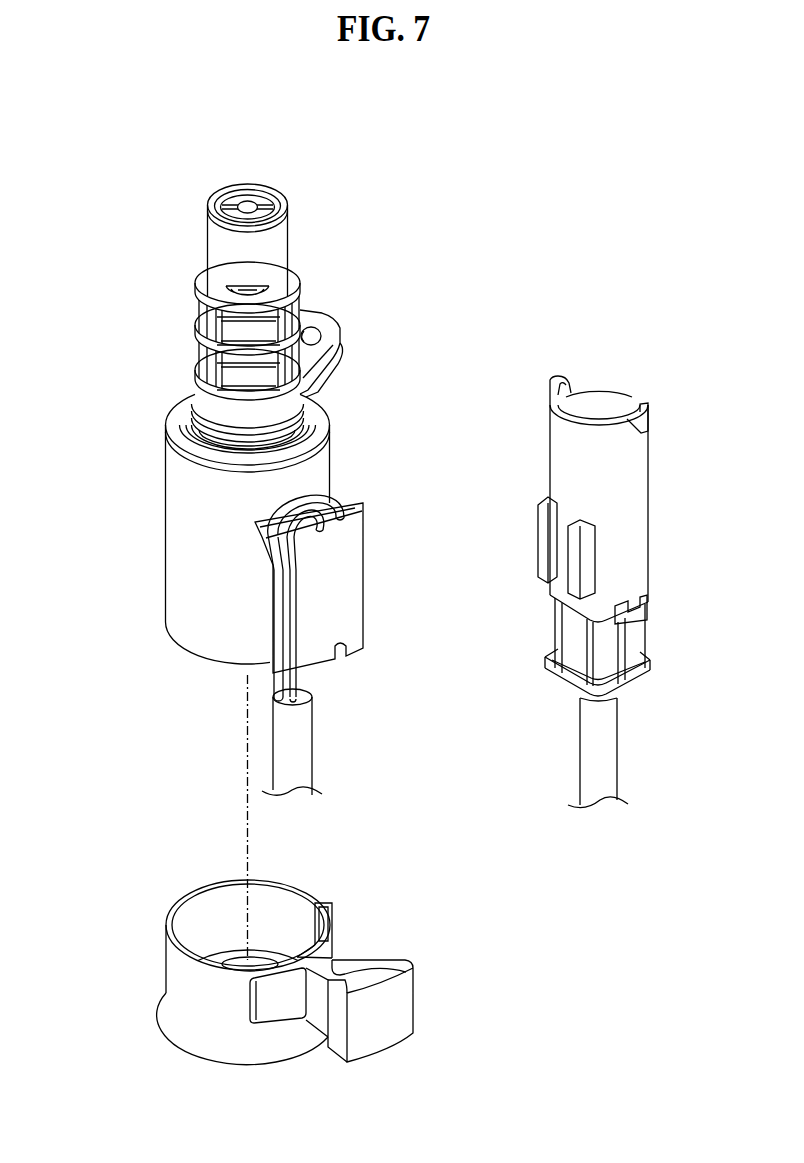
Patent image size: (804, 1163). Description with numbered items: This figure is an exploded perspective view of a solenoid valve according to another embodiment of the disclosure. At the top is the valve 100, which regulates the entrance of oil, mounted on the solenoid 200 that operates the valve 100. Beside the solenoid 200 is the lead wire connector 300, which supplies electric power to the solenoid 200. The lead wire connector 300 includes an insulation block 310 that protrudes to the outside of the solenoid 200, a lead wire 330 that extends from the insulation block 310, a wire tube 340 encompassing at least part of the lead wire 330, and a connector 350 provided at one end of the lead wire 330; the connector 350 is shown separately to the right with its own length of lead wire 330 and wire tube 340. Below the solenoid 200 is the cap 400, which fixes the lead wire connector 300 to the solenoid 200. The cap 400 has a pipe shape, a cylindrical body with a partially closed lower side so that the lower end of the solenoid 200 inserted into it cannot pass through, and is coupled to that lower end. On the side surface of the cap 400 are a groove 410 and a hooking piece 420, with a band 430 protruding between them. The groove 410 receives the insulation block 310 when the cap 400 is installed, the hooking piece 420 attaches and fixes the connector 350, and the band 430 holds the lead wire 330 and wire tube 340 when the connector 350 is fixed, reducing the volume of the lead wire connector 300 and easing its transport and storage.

The valve 100 is at (294, 189).
The solenoid 200 is at (162, 398).
The lead wire connector 300 is at (607, 758).
The insulation block 310 is at (353, 528).
The lead wire 330 is at (303, 687).
The wire tube 340 is at (300, 755).
The connector 350 is at (640, 515).
The cap 400 is at (193, 1003).
The groove 410 is at (322, 920).
The hooking piece 420 is at (268, 1010).
The band 430 is at (390, 1038).